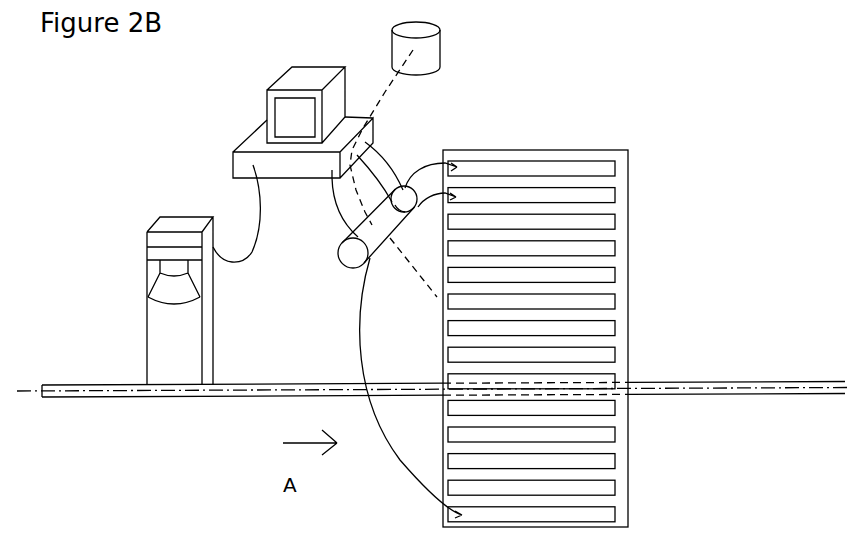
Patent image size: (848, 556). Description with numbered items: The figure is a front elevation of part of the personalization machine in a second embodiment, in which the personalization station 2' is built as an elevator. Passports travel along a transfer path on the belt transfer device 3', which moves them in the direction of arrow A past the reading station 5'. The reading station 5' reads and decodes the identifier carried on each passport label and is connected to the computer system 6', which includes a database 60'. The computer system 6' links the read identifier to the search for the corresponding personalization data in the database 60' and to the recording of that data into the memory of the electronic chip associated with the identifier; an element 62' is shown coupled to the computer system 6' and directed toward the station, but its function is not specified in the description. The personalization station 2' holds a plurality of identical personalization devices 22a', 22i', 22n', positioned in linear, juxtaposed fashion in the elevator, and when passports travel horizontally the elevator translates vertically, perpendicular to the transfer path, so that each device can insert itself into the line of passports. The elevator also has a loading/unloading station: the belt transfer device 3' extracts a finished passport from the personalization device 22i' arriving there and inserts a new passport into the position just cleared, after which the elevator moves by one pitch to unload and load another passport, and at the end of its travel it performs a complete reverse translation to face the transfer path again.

The personalization station 2' is at (584, 313).
The belt transfer device 3' is at (432, 427).
The reading station 5' is at (153, 297).
The computer system 6' is at (293, 164).
The database 60' is at (422, 159).
The movable arm / nozzle 62' is at (400, 310).
The personalization device 22a' is at (586, 181).
The personalization device 22i' is at (583, 258).
The personalization device 22n' is at (586, 513).